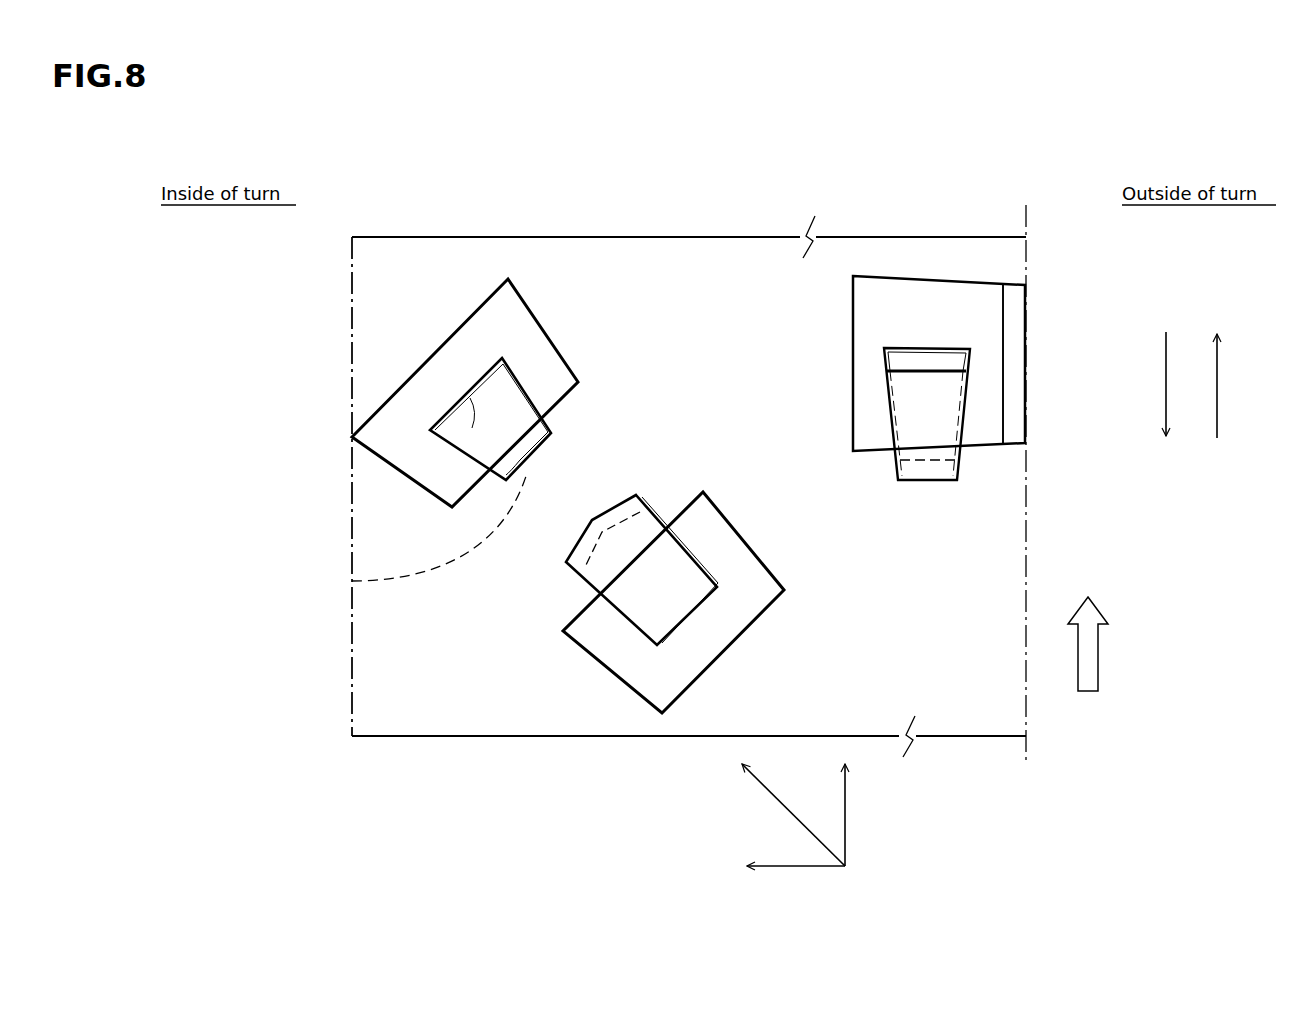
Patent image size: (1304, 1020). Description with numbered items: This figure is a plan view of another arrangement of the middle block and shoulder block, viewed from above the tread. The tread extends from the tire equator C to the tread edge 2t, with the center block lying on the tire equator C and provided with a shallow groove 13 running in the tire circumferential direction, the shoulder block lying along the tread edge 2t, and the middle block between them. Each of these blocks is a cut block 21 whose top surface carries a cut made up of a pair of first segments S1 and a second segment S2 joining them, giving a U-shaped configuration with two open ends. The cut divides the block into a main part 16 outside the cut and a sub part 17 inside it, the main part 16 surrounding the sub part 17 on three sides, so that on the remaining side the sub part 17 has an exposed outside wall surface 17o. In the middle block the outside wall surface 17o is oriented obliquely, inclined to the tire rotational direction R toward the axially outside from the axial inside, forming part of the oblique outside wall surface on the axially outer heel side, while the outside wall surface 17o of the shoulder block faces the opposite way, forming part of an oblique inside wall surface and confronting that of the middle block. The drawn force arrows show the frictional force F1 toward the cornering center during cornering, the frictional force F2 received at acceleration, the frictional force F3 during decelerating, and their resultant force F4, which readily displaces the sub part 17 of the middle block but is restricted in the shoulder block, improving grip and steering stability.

The main part 16 is at (448, 378).
The sub part 17 is at (505, 420).
The cut block 21 is at (415, 150).
The tread edge 2t is at (352, 297).
The first segment S1 is at (467, 462).
The second segment S2 is at (440, 427).
The shallow groove 13 is at (1003, 407).
The outside wall surface 17o is at (352, 581).
The tire equator C is at (1023, 470).
The tire rotational direction R is at (1088, 659).
The frictional force toward the cornering center F1 is at (778, 868).
The frictional force at acceleration F2 is at (1166, 399).
The frictional force during decelerating F3 is at (1033, 587).
The resultant force F4 is at (778, 802).